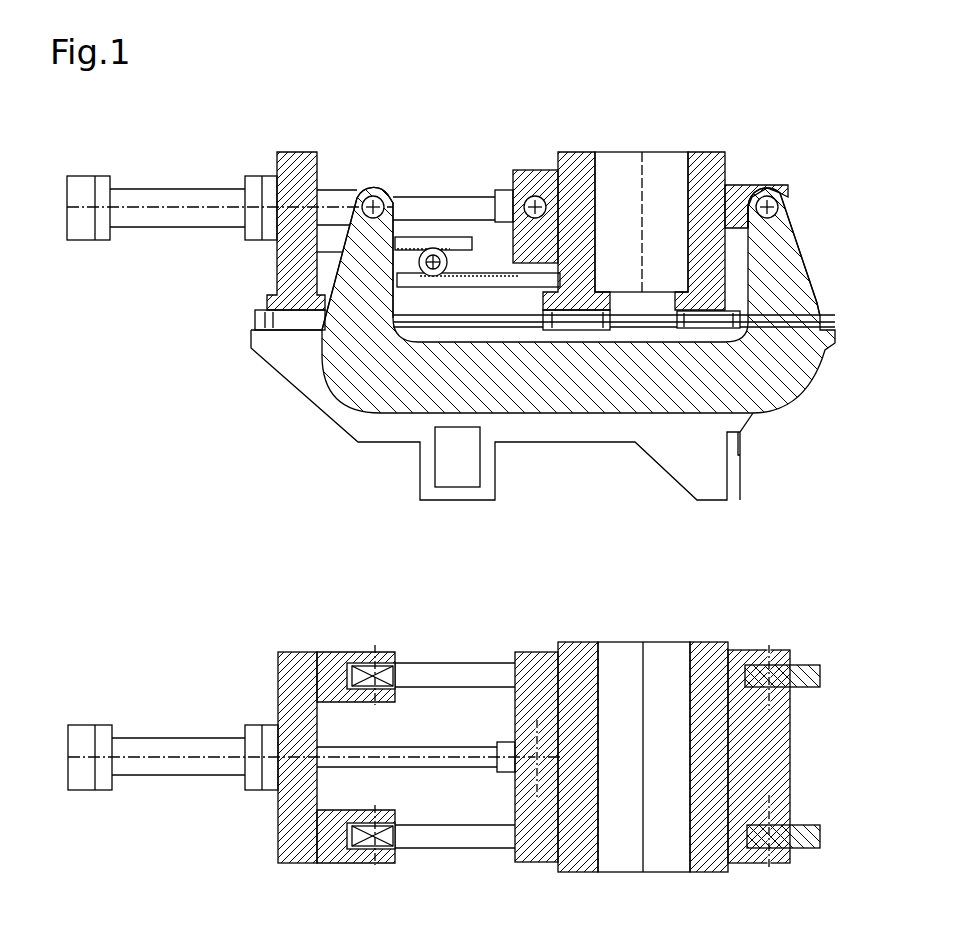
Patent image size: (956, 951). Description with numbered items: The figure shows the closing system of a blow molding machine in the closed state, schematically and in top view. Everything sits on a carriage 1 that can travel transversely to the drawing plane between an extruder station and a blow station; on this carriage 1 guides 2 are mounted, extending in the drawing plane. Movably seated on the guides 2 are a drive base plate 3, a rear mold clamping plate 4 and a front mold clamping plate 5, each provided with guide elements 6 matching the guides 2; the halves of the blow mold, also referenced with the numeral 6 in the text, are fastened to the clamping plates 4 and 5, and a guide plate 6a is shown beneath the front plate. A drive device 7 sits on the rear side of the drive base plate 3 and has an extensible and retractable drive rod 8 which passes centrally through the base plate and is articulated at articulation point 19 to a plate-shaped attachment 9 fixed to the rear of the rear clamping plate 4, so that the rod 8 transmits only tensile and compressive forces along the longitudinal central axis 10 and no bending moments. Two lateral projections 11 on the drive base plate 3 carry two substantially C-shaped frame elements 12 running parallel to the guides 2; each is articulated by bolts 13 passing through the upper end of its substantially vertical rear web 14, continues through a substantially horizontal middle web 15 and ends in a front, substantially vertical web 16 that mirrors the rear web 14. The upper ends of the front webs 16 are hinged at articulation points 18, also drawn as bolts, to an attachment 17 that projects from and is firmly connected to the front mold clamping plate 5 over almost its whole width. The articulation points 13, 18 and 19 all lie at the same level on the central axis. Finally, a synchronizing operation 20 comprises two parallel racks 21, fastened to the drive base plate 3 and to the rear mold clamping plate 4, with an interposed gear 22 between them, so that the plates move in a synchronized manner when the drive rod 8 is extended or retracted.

The carriage 1 is at (683, 457).
The guides 2 is at (434, 320).
The drive base plate 3 is at (297, 208).
The rear mold clamping plate 4 is at (588, 182).
The front mold clamping plate 5 is at (708, 178).
The guide elements 6 is at (623, 678).
The guide plate 6a is at (712, 317).
The drive device 7 is at (155, 207).
The drive rod 8 is at (670, 178).
The plate-shaped attachment 9 is at (547, 190).
The longitudinal central axis 10 is at (371, 794).
The lateral projections 11 is at (324, 217).
The C-shaped frame element 12 is at (535, 412).
The bolts 13 is at (373, 205).
The rear web 14 is at (357, 293).
The middle web 15 is at (590, 397).
The front web 16 is at (775, 262).
The attachment 17 is at (740, 197).
The articulation points 18 is at (767, 205).
The articulation point 19 is at (535, 205).
The synchronizing operation 20 is at (430, 245).
The racks 21 is at (342, 230).
The gear 22 is at (436, 258).